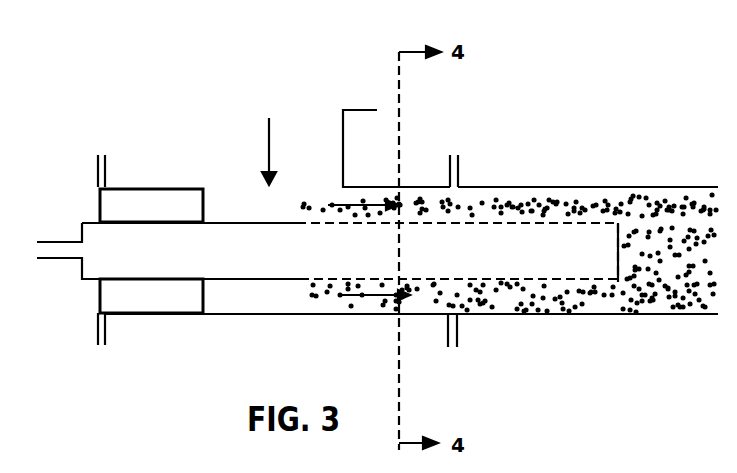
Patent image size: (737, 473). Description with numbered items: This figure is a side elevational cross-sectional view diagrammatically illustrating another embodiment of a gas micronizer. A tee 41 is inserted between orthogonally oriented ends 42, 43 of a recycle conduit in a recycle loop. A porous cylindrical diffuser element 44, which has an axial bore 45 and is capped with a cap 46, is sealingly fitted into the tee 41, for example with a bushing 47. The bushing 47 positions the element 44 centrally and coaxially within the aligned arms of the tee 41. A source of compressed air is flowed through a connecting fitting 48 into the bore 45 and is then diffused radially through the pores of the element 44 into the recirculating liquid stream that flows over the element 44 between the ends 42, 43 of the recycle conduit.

The tee 41 is at (200, 188).
The end of recycle conduit 42 is at (344, 110).
The end of recycle conduit 43 is at (623, 190).
The porous cylindrical diffuser element 44 is at (497, 287).
The axial bore 45 is at (582, 250).
The cap 46 is at (655, 317).
The bushing 47 is at (98, 287).
The connecting fitting 48 is at (48, 237).